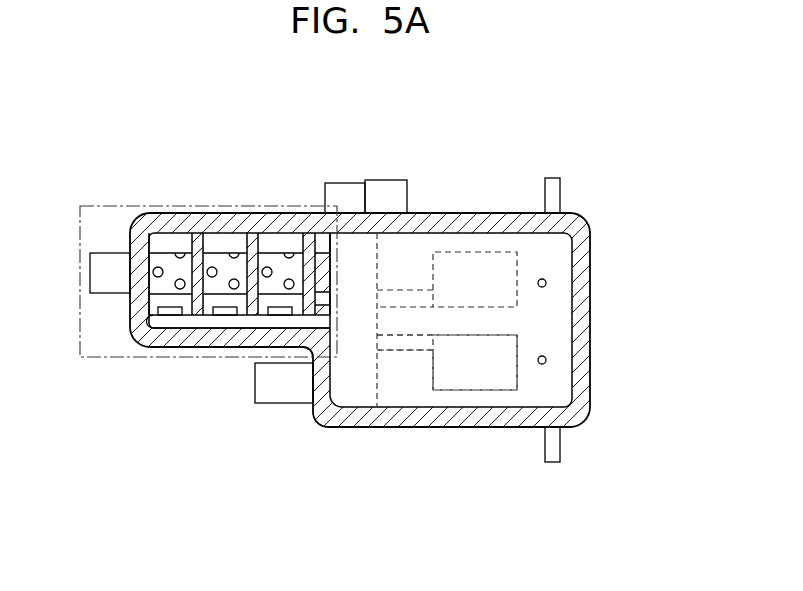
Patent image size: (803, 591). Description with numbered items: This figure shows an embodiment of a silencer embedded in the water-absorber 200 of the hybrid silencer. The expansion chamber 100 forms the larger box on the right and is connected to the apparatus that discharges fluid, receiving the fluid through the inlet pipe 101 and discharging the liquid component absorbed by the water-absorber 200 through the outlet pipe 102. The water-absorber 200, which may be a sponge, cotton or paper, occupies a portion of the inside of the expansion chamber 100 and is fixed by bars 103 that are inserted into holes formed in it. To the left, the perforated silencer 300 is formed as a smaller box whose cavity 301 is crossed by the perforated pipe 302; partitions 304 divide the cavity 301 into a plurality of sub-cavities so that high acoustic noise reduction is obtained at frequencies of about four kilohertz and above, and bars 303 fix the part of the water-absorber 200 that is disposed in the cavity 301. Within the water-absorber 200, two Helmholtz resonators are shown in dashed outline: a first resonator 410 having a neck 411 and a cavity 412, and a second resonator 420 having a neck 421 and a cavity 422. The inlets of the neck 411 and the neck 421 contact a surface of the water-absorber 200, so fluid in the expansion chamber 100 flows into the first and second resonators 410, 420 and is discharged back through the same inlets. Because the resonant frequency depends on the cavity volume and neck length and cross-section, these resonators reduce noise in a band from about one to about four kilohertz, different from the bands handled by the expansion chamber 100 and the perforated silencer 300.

The expansion chamber 100 is at (357, 390).
The inlet pipe 101 is at (283, 403).
The outlet pipe 102 is at (380, 180).
The bars 103 is at (547, 283).
The water-absorber 200 is at (548, 252).
The perforated silencer 300 is at (109, 358).
The cavity 301 is at (175, 242).
The perforated pipe 302 is at (110, 263).
The bars 303 is at (280, 310).
The partitions 304 is at (253, 257).
The first resonator 410 is at (495, 247).
The neck 411 is at (423, 288).
The cavity 412 is at (475, 268).
The second resonator 420 is at (497, 395).
The neck 421 is at (423, 350).
The cavity 422 is at (475, 372).